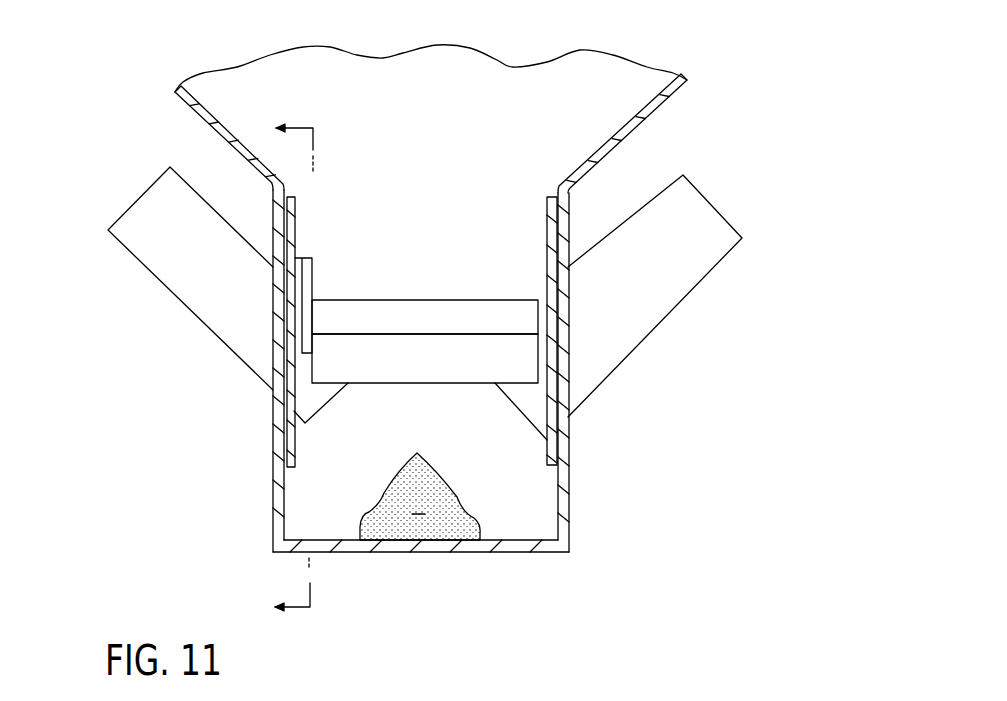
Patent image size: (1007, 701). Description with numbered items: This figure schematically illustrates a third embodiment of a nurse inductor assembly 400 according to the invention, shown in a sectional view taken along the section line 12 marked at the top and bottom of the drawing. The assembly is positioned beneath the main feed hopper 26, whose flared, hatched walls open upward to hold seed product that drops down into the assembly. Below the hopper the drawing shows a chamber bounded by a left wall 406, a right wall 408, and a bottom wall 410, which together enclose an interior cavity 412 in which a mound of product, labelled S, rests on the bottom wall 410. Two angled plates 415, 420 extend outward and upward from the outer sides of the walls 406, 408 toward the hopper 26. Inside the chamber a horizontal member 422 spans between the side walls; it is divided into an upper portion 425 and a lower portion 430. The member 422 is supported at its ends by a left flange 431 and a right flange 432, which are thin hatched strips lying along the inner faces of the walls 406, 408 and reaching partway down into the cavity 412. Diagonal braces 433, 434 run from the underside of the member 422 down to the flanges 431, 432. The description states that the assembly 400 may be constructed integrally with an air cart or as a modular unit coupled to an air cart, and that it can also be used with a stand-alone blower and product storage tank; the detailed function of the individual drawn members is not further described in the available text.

The section line 12- 12 is at (294, 369).
The main feed hopper 26 is at (665, 104).
The nurse inductor assembly 400 is at (478, 390).
The first side wall 406 is at (273, 504).
The second side wall 408 is at (569, 504).
The bottom wall 410 is at (418, 553).
The sample cavity 412 is at (500, 476).
The first deflector plate 415 is at (185, 320).
The second deflector plate 420 is at (652, 352).
The support member 422 is at (425, 319).
The upper portion of support member 425 is at (373, 313).
The lower portion of support member 430 is at (400, 372).
The first flange 431 is at (301, 289).
The second flange 432 is at (546, 298).
The first brace 433 is at (325, 404).
The second brace 434 is at (520, 411).